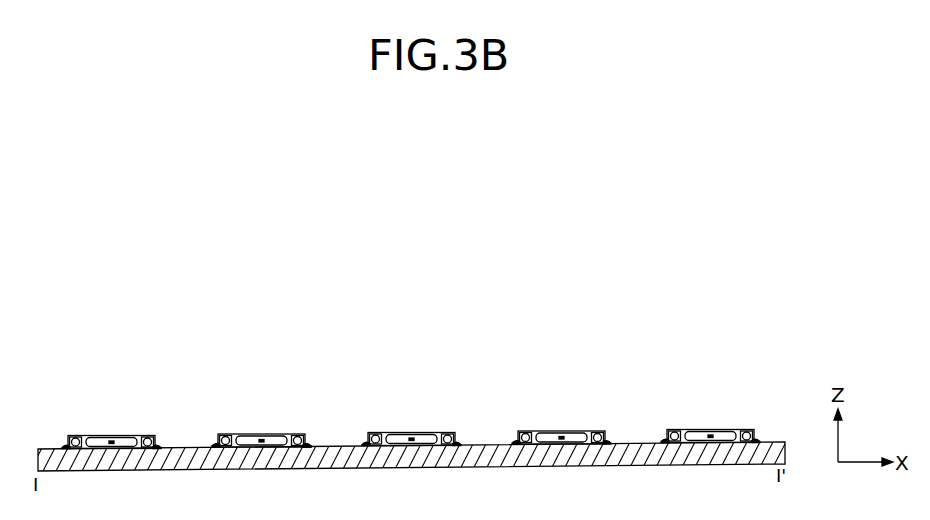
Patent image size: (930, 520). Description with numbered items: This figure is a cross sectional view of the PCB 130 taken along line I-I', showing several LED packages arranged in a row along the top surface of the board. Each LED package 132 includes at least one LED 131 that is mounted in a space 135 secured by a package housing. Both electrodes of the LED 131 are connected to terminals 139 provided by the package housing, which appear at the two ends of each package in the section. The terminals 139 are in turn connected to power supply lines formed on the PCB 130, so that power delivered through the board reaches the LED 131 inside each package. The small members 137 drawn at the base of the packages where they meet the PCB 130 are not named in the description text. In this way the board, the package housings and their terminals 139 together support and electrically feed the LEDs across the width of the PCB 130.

The PCB 130 is at (337, 439).
The LED 131 is at (558, 434).
The LED package 132 is at (258, 436).
The space 135 is at (693, 433).
The solder / adhesive member 137 is at (213, 441).
The terminals 139 is at (443, 436).